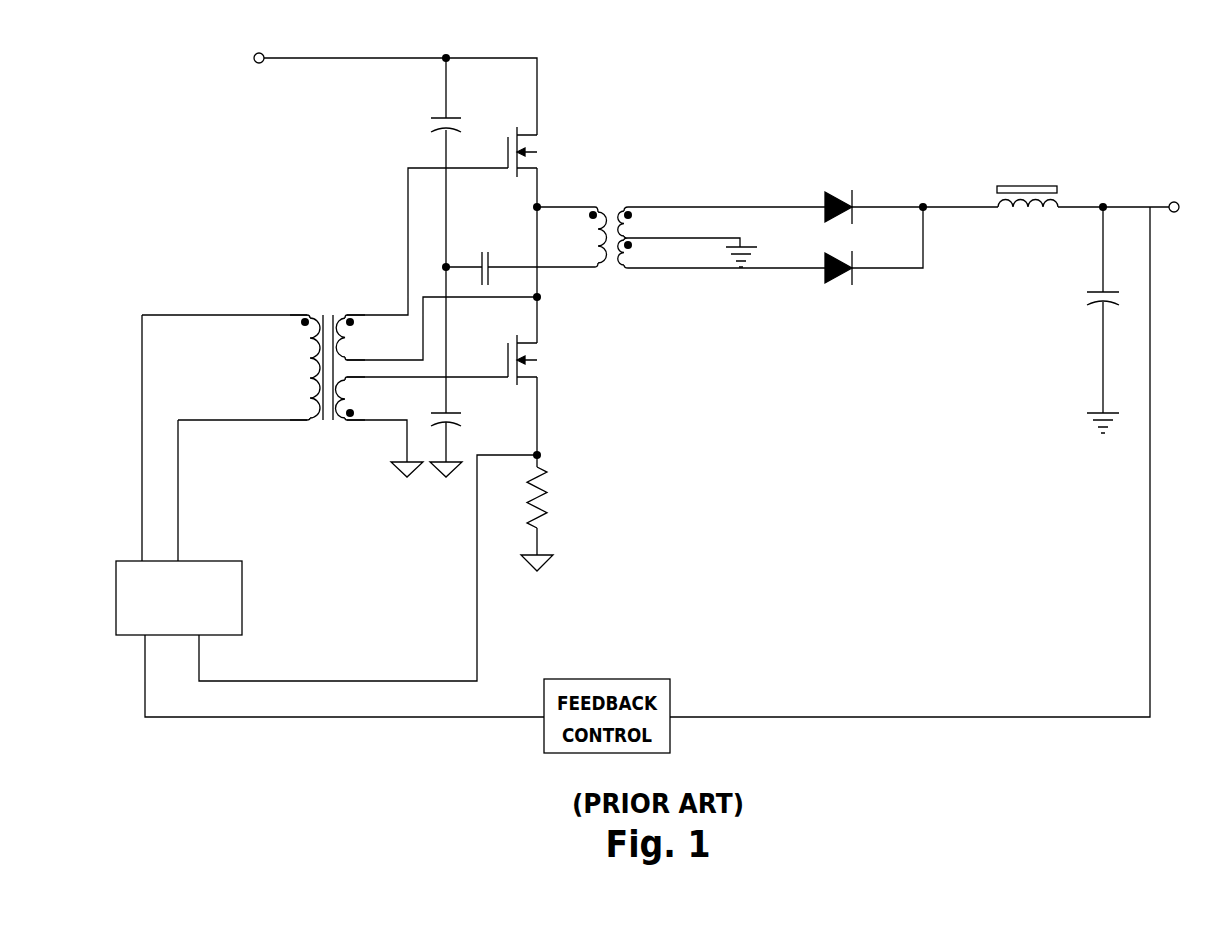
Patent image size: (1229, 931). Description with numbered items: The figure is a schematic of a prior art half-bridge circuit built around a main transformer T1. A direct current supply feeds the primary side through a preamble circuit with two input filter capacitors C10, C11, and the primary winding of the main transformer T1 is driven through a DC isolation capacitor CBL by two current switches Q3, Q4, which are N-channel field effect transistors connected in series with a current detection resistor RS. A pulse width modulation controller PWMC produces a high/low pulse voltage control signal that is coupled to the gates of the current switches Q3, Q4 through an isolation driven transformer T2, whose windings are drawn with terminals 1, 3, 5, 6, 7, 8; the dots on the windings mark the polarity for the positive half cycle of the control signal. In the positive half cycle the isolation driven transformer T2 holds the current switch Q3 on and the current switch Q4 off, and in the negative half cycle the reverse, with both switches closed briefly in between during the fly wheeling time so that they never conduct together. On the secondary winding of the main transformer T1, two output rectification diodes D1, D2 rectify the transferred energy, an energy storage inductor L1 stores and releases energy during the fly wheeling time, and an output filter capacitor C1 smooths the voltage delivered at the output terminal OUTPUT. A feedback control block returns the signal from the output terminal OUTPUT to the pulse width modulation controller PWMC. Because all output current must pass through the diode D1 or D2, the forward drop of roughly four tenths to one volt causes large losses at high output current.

The input filter capacitor C10 is at (426, 122).
The current switch Q3 is at (537, 152).
The DC isolation capacitor CBL is at (486, 255).
The main transformer T1 is at (670, 224).
The output rectification diode D1 is at (854, 209).
The output rectification diode D2 is at (854, 274).
The energy storage inductor L1 is at (1027, 184).
The output terminal OUTPUT is at (1184, 194).
The output filter capacitor C1 is at (1090, 360).
The isolation driven transformer T2 is at (327, 351).
The drive transformer primary pin 1 is at (298, 305).
The drive transformer primary pin 3 is at (298, 411).
The drive transformer secondary pin 5 is at (357, 411).
The drive transformer secondary pin 6 is at (357, 387).
The drive transformer secondary pin 7 is at (357, 351).
The drive transformer secondary pin 8 is at (356, 305).
The current switch Q4 is at (537, 360).
The input filter capacitor C11 is at (465, 422).
The current detection resistor RS is at (549, 497).
The pulse width modulation controller PWMC is at (179, 598).